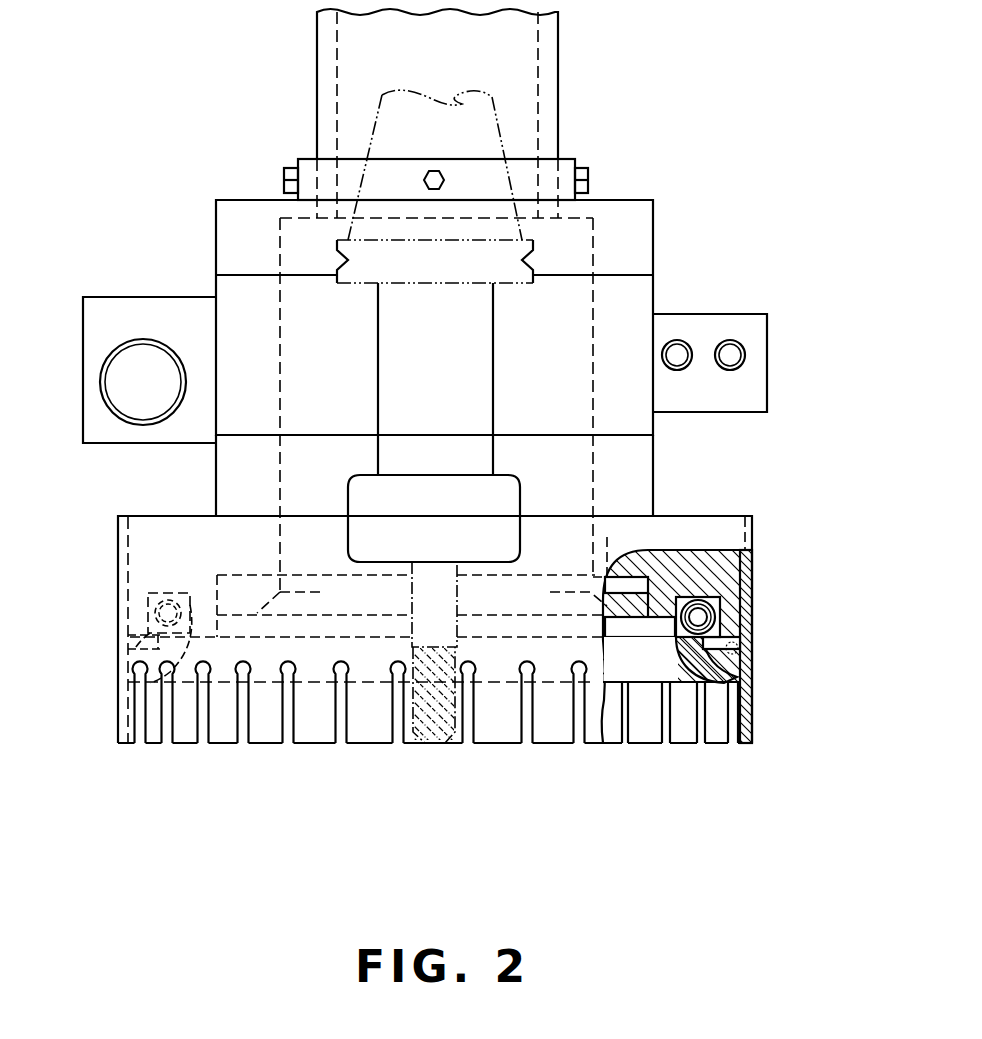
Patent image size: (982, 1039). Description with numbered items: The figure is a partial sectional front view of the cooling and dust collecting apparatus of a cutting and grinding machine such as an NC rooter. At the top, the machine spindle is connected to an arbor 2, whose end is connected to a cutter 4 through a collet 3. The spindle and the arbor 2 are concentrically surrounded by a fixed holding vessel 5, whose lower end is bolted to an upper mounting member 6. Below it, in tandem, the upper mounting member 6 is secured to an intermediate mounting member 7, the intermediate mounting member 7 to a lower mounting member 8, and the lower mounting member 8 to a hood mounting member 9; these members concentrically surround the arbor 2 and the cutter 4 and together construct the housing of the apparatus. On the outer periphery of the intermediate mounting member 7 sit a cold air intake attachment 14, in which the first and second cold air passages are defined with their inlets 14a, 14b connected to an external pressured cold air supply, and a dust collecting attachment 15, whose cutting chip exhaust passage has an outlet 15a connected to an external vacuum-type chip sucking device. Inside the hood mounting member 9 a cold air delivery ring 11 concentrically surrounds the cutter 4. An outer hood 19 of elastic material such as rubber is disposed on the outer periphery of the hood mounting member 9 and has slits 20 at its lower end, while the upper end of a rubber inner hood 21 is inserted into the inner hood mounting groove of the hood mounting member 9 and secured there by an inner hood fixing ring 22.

The arbor 2 is at (497, 118).
The collet 3 is at (522, 493).
The cutter 4 is at (413, 738).
The fixed holding vessel 5 is at (558, 40).
The upper mounting member 6 is at (655, 213).
The intermediate mounting member 7 is at (655, 296).
The lower mounting member 8 is at (655, 466).
The hood mounting member 9 is at (722, 523).
The cold air delivery ring 11 is at (650, 615).
The cold air intake attachment 14 is at (767, 357).
The inlet of the first cold air passage 14a is at (681, 341).
The inlet of the second cold air passage 14b is at (736, 341).
The dust collecting attachment 15 is at (146, 297).
The outlet of the cutting chip exhaust passage 15a is at (141, 410).
The outer hood 19 is at (189, 728).
The slits 20 is at (288, 733).
The inner hood 21 is at (732, 675).
The inner hood fixing ring 22 is at (118, 648).